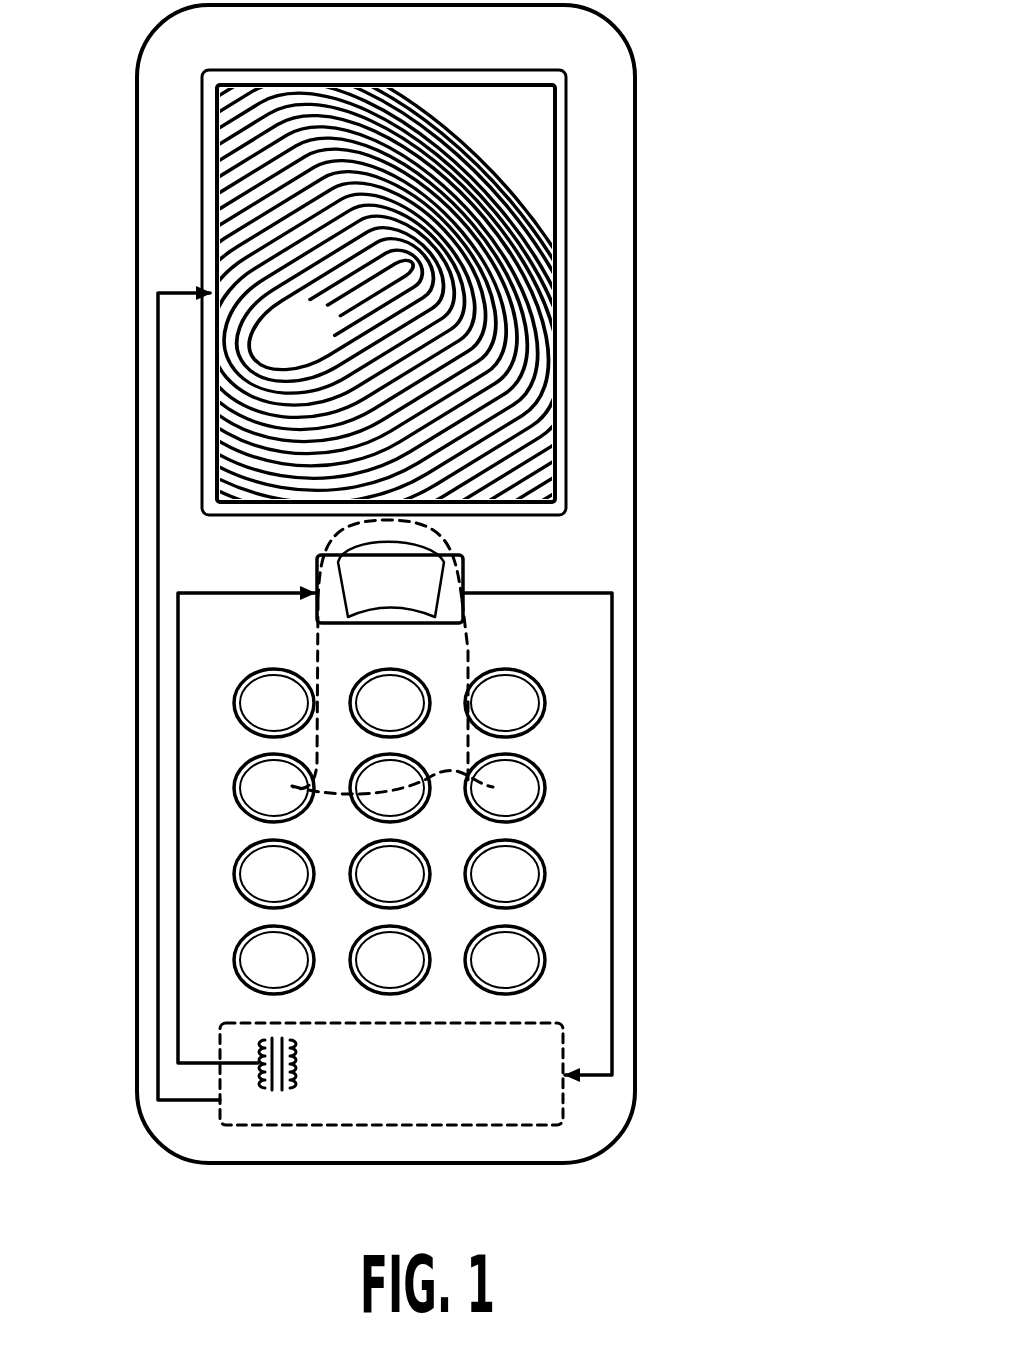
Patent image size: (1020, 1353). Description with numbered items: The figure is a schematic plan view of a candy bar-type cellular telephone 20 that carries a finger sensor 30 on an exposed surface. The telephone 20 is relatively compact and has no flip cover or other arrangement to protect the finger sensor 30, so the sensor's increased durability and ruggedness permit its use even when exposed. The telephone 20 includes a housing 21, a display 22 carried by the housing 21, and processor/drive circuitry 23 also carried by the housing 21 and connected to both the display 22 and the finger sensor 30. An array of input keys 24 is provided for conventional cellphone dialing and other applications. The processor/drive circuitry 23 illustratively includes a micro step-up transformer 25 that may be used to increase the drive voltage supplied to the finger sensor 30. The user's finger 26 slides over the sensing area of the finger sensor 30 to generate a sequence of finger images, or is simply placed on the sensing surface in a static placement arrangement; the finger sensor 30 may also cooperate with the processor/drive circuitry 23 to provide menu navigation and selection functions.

The cellular telephone 20 is at (712, 127).
The housing 21 is at (137, 165).
The display 22 is at (253, 508).
The processor/drive circuitry 23 is at (566, 1042).
The input keys 24 is at (538, 777).
The micro step-up transformer 25 is at (270, 1092).
The finger 26 is at (467, 648).
The finger sensor 30 is at (466, 578).